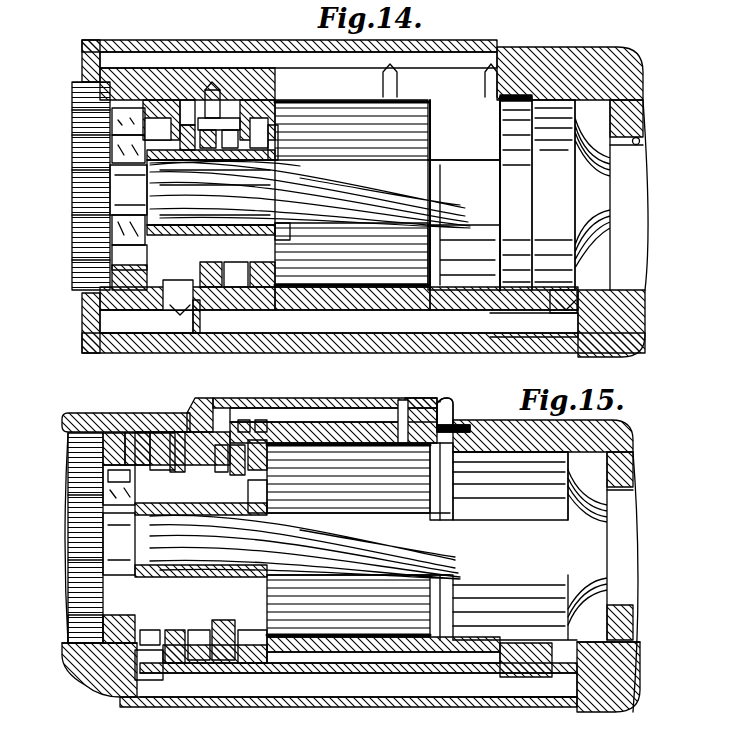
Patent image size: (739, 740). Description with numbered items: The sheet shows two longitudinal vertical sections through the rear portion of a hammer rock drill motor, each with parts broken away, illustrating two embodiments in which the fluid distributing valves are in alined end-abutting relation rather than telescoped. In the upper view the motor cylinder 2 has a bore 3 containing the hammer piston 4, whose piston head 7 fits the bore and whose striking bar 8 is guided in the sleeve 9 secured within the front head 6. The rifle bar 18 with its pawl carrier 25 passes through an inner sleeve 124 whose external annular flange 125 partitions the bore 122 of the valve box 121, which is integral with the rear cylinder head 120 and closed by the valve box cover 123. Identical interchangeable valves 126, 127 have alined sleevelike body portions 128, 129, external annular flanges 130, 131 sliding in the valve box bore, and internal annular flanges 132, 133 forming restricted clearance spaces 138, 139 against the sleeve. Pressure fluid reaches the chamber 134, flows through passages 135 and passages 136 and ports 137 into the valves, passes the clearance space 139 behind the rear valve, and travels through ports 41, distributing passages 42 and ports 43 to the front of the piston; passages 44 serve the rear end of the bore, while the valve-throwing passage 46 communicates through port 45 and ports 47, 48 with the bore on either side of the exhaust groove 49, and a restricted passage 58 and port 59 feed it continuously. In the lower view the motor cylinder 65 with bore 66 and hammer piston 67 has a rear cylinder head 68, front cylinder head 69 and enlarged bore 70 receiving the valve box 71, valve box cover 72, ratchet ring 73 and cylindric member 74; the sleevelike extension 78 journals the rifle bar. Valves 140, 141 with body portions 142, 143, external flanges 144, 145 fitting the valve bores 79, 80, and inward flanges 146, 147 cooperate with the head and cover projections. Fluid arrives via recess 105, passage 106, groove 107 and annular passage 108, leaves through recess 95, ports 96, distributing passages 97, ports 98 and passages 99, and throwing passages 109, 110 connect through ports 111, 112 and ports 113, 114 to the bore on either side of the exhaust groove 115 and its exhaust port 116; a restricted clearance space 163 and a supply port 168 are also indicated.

In FIG. 14, the motor cylinder 2 is at (515, 95).
In FIG. 14, the bore 3 is at (395, 75).
In FIG. 14, the hammer piston 4 is at (548, 115).
In FIG. 14, the front head 6 is at (625, 120).
In FIG. 14, the piston head 7 is at (522, 292).
In FIG. 14, the striking bar 8 is at (625, 190).
In FIG. 14, the sleeve 9 is at (640, 140).
In FIG. 14, the rifle bar 18 is at (388, 210).
In FIG. 15, the rifle bar 18 is at (385, 522).
In FIG. 14, the pawl carrier 25 is at (125, 193).
In FIG. 15, the pawl carrier 25 is at (115, 534).
In FIG. 14, the ports 41 is at (180, 300).
In FIG. 14, the distributing passages 42 is at (386, 325).
In FIG. 14, the ports 43 is at (534, 325).
In FIG. 14, the passages 44 is at (292, 40).
In FIG. 14, the port 45 is at (225, 118).
In FIG. 14, the valve-throwing passage 46 is at (300, 60).
In FIG. 14, the port 47 is at (395, 105).
In FIG. 14, the port 48 is at (492, 70).
In FIG. 14, the annular exhaust groove 49 is at (441, 292).
In FIG. 14, the restricted passage 58 is at (90, 86).
In FIG. 14, the port 59 is at (138, 74).
In FIG. 15, the motor cylinder 65 is at (360, 432).
In FIG. 15, the bore 66 is at (332, 655).
In FIG. 15, the hammer piston 67 is at (488, 460).
In FIG. 15, the rear cylinder head 68 is at (261, 420).
In FIG. 15, the front cylinder head 69 is at (628, 476).
In FIG. 15, the enlarged bore 70 is at (85, 633).
In FIG. 15, the valve box 71 is at (244, 420).
In FIG. 15, the valve box cover 72 is at (110, 642).
In FIG. 15, the ratchet ring 73 is at (92, 433).
In FIG. 15, the cylindric member 74 is at (78, 424).
In FIG. 15, the sleevelike extension 78 is at (268, 496).
In FIG. 15, the valve bore 79 is at (224, 660).
In FIG. 15, the valve bore 80 is at (168, 660).
In FIG. 15, the annular recess 95 is at (165, 640).
In FIG. 15, the ports 96 is at (149, 666).
In FIG. 15, the distributing passages 97 is at (343, 700).
In FIG. 15, the ports 98 is at (572, 657).
In FIG. 15, the passages 99 is at (258, 440).
In FIG. 15, the annular recess 105 is at (114, 436).
In FIG. 15, the passage 106 is at (124, 432).
In FIG. 15, the internal annular groove 107 is at (140, 436).
In FIG. 15, the annular passage 108 is at (162, 433).
In FIG. 15, the throwing passage 109 is at (335, 412).
In FIG. 15, the throwing passage 110 is at (385, 660).
In FIG. 15, the port 111 is at (222, 445).
In FIG. 15, the port 112 is at (200, 660).
In FIG. 15, the port 113 is at (403, 420).
In FIG. 15, the port 114 is at (502, 660).
In FIG. 15, the annular exhaust groove 115 is at (450, 430).
In FIG. 15, the exhaust port 116 is at (452, 420).
In FIG. 14, the rear cylinder head 120 is at (352, 307).
In FIG. 14, the valve box 121 is at (214, 296).
In FIG. 14, the bore 122 is at (230, 130).
In FIG. 14, the valve box cover 123 is at (162, 78).
In FIG. 14, the inner sleeve 124 is at (276, 230).
In FIG. 14, the external annular flange 125 is at (239, 296).
In FIG. 14, the fluid distributing valve 126 is at (260, 118).
In FIG. 14, the fluid distributing valve 127 is at (185, 100).
In FIG. 14, the sleevelike body portion 128 is at (255, 100).
In FIG. 14, the sleevelike body portion 129 is at (213, 88).
In FIG. 14, the external annular flange 130 is at (265, 296).
In FIG. 14, the external annular flange 131 is at (197, 315).
In FIG. 14, the internal annular flange 132 is at (280, 135).
In FIG. 14, the internal annular flange 133 is at (195, 130).
In FIG. 14, the chamber 134 is at (140, 246).
In FIG. 14, the passages 135 is at (112, 222).
In FIG. 14, the passages 136 is at (110, 160).
In FIG. 14, the ports 137 is at (240, 192).
In FIG. 14, the restricted clearance space 138 is at (290, 241).
In FIG. 14, the restricted clearance space 139 is at (146, 321).
In FIG. 15, the valve 140 is at (238, 445).
In FIG. 15, the valve 141 is at (178, 432).
In FIG. 15, the sleevelike body portion 142 is at (285, 490).
In FIG. 15, the sleevelike body portion 143 is at (203, 425).
In FIG. 15, the external annular flange 144 is at (252, 663).
In FIG. 15, the external annular flange 145 is at (175, 663).
In FIG. 15, the inwardly directed annular flange 146 is at (283, 584).
In FIG. 15, the inwardly directed annular flange 147 is at (128, 660).
In FIG. 15, the restricted clearance space 163 is at (204, 734).
In FIG. 15, the port 168 is at (244, 733).